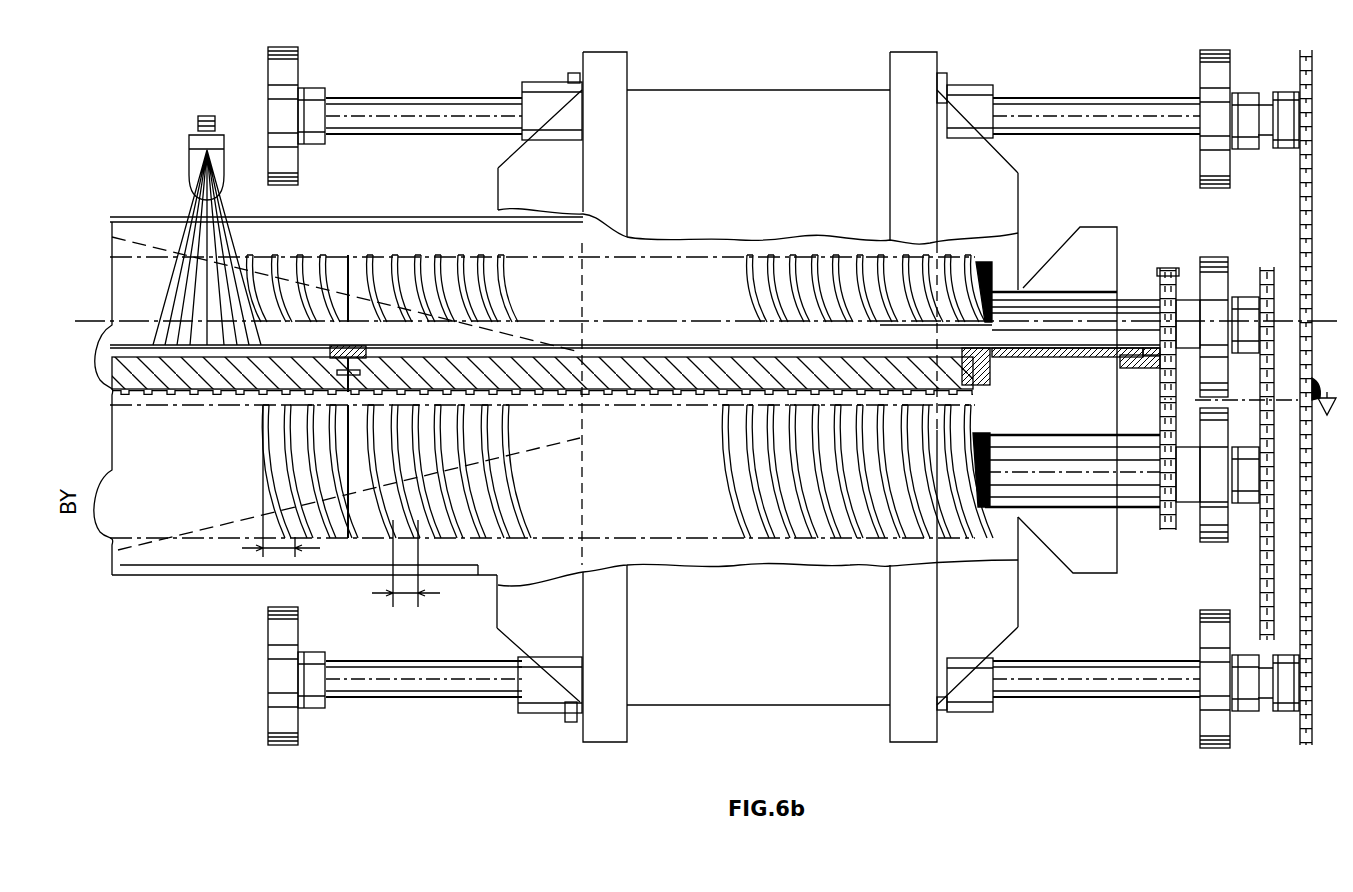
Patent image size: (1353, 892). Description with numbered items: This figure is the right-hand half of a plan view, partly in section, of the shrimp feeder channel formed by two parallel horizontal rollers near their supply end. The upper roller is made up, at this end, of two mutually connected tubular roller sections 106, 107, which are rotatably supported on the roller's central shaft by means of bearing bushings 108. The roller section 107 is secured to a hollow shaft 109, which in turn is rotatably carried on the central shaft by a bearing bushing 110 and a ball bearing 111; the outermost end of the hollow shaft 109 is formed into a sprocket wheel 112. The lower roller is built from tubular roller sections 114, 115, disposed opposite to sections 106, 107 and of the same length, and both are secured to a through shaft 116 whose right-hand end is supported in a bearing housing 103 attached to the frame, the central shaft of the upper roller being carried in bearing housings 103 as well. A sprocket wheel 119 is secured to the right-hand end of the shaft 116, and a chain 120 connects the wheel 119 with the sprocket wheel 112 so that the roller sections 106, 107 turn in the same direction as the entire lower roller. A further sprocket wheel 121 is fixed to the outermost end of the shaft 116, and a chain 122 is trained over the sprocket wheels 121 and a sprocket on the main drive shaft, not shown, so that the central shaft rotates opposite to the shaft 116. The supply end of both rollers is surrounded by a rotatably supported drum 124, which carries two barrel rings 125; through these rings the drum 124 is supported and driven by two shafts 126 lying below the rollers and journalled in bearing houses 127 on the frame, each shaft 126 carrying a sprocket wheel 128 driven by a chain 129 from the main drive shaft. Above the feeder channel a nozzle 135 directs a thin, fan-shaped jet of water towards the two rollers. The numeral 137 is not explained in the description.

The bearing housing 103 is at (1207, 273).
The tubular roller section 106 is at (293, 258).
The tubular roller section 107 is at (518, 263).
The bearing bushing 108 is at (352, 347).
The hollow shaft 109 is at (1052, 356).
The bearing bushing 110 is at (990, 356).
The ball bearing 111 is at (1158, 375).
The sprocket wheel 112 is at (1160, 274).
The tubular roller section 114 is at (216, 523).
The tubular roller section 115 is at (797, 530).
The through shaft 116 is at (1038, 453).
The sprocket wheel 119 is at (1160, 516).
The chain 120 is at (1160, 410).
The sprocket wheel 121 is at (1262, 280).
The chain 122 is at (1262, 585).
The drum 124 is at (756, 102).
The barrel ring 125 is at (606, 725).
The shaft 126 is at (1073, 115).
The bearing house 127 is at (283, 72).
The sprocket wheel 128 is at (1292, 104).
The chain 129 is at (1300, 218).
The nozzle 135 is at (198, 150).
The screw flight 137 is at (330, 550).